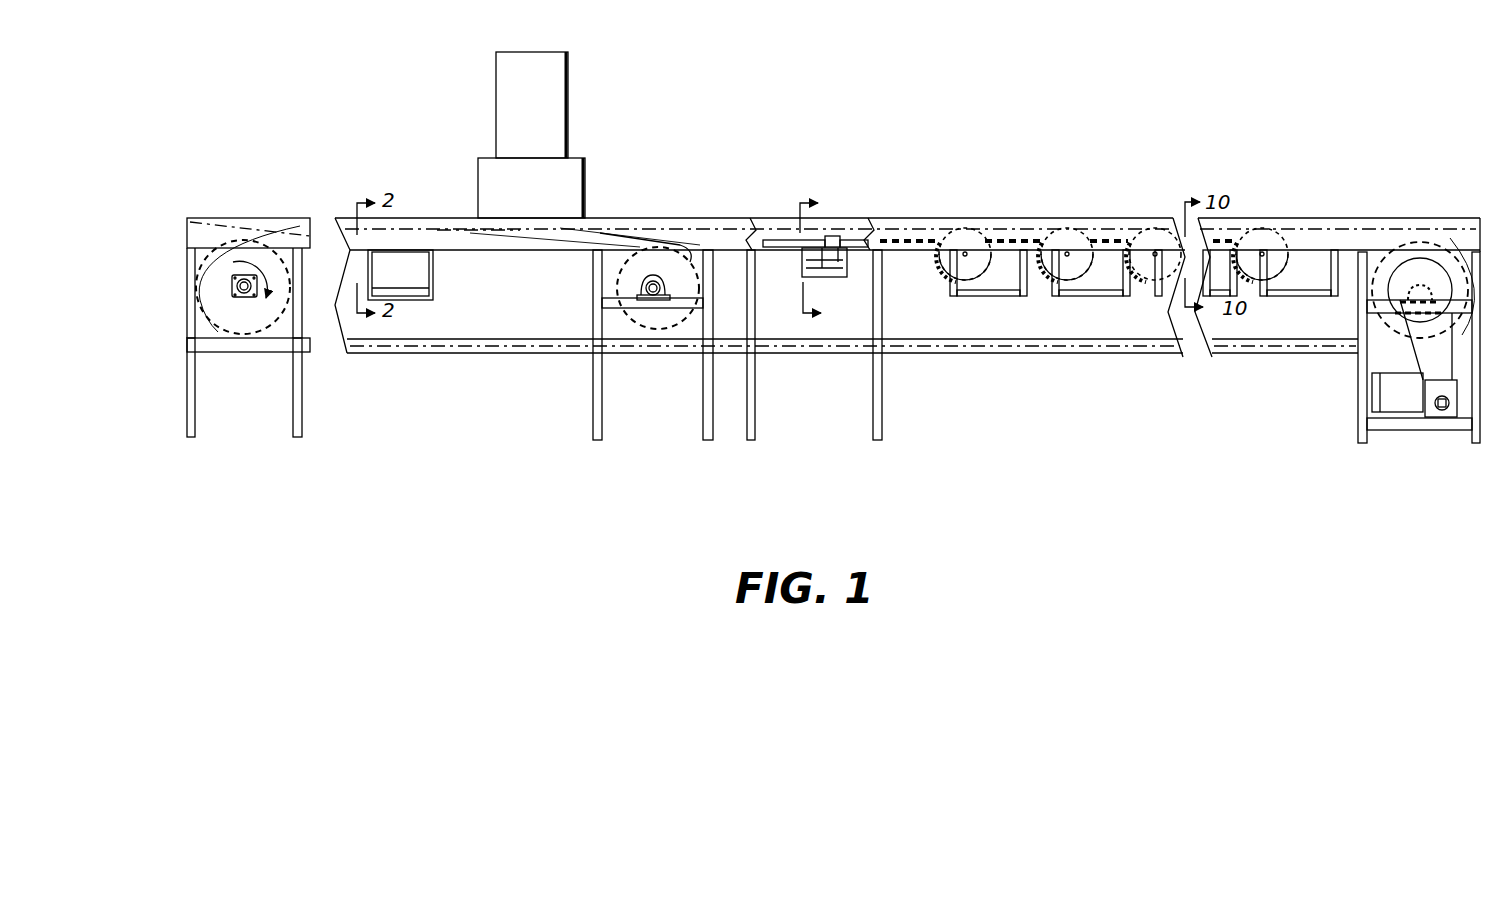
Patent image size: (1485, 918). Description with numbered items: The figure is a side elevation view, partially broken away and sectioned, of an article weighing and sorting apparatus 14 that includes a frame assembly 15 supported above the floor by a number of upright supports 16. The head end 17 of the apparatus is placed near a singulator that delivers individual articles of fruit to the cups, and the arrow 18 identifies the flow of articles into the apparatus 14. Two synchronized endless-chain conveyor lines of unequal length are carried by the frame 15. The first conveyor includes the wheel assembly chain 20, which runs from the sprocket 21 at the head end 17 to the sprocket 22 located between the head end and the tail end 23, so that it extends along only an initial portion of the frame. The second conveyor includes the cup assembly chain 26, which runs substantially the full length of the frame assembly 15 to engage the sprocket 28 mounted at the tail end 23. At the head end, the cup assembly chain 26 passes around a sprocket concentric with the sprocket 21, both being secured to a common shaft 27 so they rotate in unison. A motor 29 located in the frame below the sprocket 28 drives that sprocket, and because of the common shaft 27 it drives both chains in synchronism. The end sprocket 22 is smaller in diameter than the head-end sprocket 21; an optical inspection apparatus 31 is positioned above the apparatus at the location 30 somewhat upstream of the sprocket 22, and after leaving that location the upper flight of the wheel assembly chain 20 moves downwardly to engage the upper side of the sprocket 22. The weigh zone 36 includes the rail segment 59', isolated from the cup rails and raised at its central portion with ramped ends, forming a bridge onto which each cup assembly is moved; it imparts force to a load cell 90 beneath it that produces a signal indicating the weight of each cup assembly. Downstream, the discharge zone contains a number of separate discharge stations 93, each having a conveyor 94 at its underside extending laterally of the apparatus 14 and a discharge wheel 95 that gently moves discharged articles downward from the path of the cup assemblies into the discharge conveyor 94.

The weighing and sorting apparatus 14 is at (510, 424).
The frame assembly 15 is at (628, 352).
The upright supports 16 is at (293, 426).
The head end 17 is at (180, 283).
The arrow 18 is at (170, 183).
The wheel assembly chain 20 is at (623, 238).
The sprocket 21 is at (250, 328).
The sprocket 22 is at (652, 324).
The tail end 23 is at (1483, 237).
The cup assembly chain 26 is at (913, 230).
The common shaft 27 is at (246, 278).
The sprocket 28 is at (1438, 247).
The motor 29 is at (1398, 402).
The location 30 is at (543, 230).
The optical inspection apparatus 31 is at (555, 133).
The weigh zone 36 is at (842, 211).
The rail segment 59' is at (809, 210).
The load cell 90 is at (823, 257).
The discharge stations 93 is at (1146, 244).
The conveyor 94 is at (990, 288).
The discharge wheel 95 is at (1068, 230).